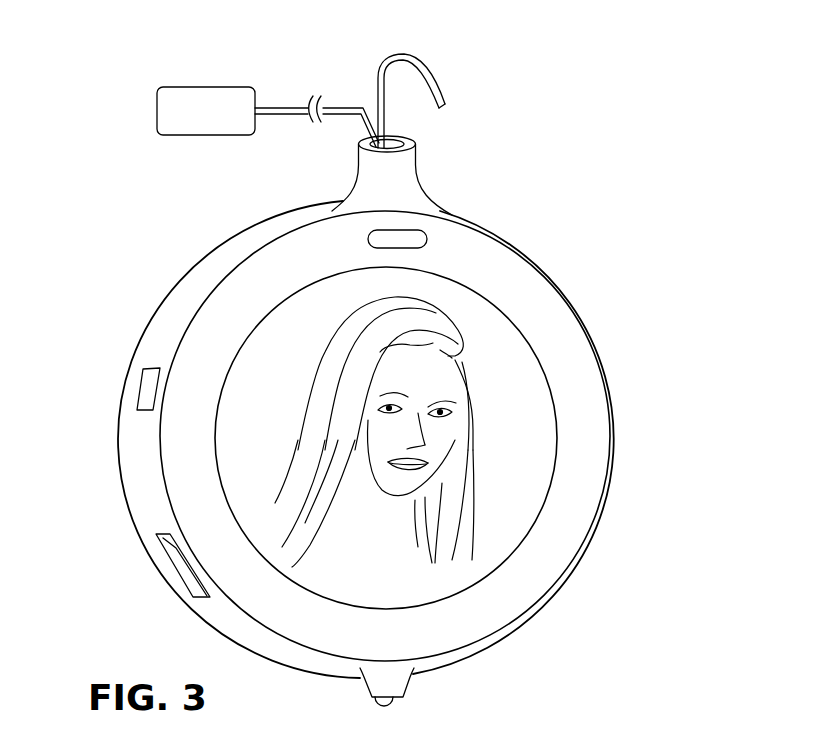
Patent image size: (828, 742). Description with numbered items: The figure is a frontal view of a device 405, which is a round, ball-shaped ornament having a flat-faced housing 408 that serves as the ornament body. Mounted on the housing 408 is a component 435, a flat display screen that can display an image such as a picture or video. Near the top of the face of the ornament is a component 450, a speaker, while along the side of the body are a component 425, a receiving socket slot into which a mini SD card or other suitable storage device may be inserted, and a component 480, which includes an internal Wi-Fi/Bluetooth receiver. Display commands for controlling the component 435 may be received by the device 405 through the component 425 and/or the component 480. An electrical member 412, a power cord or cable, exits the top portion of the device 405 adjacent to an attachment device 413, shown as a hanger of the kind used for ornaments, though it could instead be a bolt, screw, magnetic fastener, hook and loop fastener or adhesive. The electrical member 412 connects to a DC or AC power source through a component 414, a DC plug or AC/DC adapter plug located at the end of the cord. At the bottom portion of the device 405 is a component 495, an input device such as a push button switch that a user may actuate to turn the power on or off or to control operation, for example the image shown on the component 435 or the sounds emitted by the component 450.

The device 405 is at (573, 175).
The flat-faced housing 408 is at (614, 437).
The electrical member 412 is at (340, 107).
The attachment device 413 is at (434, 77).
The component (adapter or power plug) 414 is at (208, 85).
The component (receiving socket slot) 425 is at (172, 565).
The component (flat display screen) 435 is at (532, 343).
The component (speaker) 450 is at (357, 242).
The component (Wi-Fi/Bluetooth receiver) 480 is at (150, 387).
The component (input device) 495 is at (384, 700).